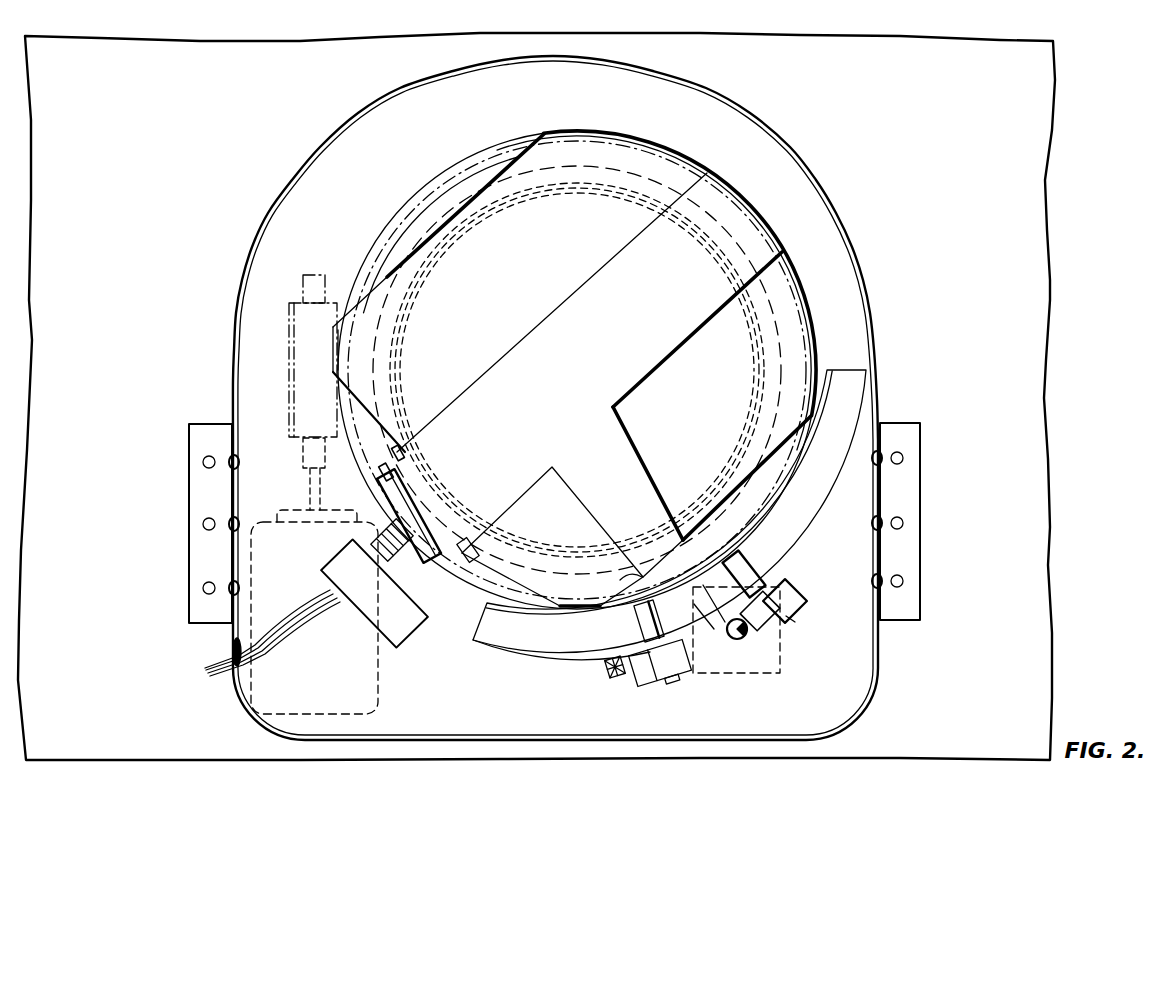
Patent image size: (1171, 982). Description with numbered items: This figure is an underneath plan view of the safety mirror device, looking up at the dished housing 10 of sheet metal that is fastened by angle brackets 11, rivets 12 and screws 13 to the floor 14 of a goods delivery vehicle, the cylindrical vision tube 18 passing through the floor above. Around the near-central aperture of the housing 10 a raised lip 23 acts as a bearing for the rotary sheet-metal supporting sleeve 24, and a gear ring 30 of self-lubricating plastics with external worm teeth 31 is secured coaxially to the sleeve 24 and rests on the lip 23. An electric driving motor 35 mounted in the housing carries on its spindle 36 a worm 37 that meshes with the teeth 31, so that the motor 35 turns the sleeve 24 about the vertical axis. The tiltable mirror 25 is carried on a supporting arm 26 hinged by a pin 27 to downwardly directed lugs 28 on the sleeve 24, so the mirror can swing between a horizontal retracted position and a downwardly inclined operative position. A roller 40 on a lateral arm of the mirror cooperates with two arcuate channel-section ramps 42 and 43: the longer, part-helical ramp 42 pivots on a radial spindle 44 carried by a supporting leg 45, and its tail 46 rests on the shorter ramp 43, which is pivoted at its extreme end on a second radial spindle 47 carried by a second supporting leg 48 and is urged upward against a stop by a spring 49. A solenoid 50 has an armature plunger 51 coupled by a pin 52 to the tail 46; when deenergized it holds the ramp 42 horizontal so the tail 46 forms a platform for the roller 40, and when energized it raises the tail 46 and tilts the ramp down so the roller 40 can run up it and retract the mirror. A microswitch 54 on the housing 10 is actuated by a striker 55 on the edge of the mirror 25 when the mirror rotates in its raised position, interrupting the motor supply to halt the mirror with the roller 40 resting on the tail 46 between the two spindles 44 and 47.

The dished housing 10 is at (846, 235).
The angle brackets 11 is at (192, 497).
The rivets 12 is at (240, 459).
The screws 13 is at (904, 458).
The floor 14 is at (1038, 231).
The cylindrical vision tube 18 is at (527, 195).
The raised lip 23 is at (424, 212).
The supporting sleeve 24 is at (579, 183).
The tiltable mirror 25 is at (468, 205).
The supporting arm 26 is at (537, 329).
The pin 27 is at (473, 558).
The downwardly directed lugs 28 is at (380, 474).
The gear ring 30 is at (394, 451).
The external worm teeth 31 is at (393, 227).
The electric driving motor 35 is at (380, 683).
The spindle 36 is at (305, 496).
The worm 37 is at (289, 380).
The roller 40 is at (700, 620).
The ramp 42 is at (858, 397).
The ramp 43 is at (528, 641).
The spindle 44 is at (752, 566).
The supporting leg 45 is at (792, 582).
The tail 46 is at (739, 640).
The second radial spindle 47 is at (641, 632).
The second supporting leg 48 is at (650, 680).
The spring 49 is at (609, 676).
The solenoid 50 is at (782, 663).
The armature plunger 51 is at (748, 633).
The pin 52 is at (760, 611).
The microswitch 54 is at (403, 620).
The striker 55 is at (427, 562).